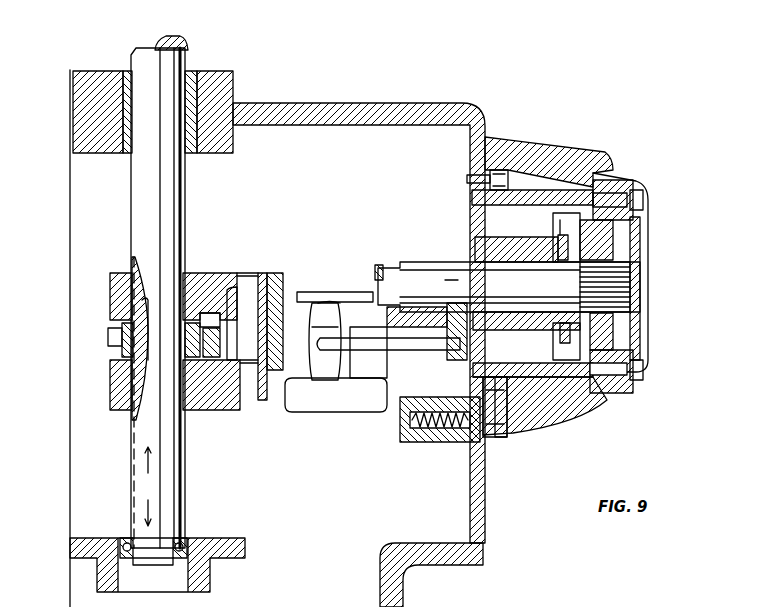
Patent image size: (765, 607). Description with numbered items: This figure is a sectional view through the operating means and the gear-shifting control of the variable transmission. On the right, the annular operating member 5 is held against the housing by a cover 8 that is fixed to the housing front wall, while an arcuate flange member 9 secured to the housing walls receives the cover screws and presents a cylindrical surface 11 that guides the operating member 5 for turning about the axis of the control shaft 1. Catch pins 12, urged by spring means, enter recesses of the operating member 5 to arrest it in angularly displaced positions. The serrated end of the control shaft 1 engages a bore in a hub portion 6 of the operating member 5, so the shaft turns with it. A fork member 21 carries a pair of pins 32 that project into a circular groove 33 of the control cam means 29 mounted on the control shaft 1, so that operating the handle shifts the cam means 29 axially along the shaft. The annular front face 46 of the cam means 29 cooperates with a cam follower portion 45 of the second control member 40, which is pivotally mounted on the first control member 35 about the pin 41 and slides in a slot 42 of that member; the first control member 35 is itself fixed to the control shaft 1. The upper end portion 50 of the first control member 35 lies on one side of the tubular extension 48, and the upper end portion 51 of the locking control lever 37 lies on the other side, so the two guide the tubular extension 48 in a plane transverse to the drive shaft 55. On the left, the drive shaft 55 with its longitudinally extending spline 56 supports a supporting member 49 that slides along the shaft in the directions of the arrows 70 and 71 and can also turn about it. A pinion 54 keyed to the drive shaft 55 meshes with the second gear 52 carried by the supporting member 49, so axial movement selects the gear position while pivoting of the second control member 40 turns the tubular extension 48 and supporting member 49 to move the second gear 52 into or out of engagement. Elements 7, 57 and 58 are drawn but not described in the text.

The control shaft 1 is at (451, 273).
The operating member 5 is at (585, 420).
The hub portion 6 is at (612, 322).
The cover with splined shaft 7 is at (625, 270).
The cover 8 is at (620, 385).
The arcuate flange member 9 is at (503, 420).
The cylindrical surface 11 is at (497, 168).
The catch pins 12 is at (462, 432).
The fork member 21 is at (553, 353).
The control cam means 29 is at (493, 240).
The pins 32 is at (562, 250).
The circular groove 33 is at (568, 222).
The first control member 35 is at (388, 351).
The locking control lever 37 is at (348, 300).
The second control member 40 is at (430, 330).
The pin 41 is at (440, 292).
The slot 42 is at (420, 348).
The cam follower portion 45 is at (465, 362).
The annular front face 46 is at (470, 240).
The tubular extension 48 is at (306, 290).
The supporting member 49 is at (228, 278).
The upper end portion 50 is at (343, 407).
The upper end portion 51 is at (330, 300).
The second gear 52 is at (304, 380).
The pinion 54 is at (108, 336).
The drive shaft 55 is at (163, 502).
The spline 56 is at (133, 422).
The rings 57 is at (240, 300).
The key 58 is at (205, 410).
The arrow 70 is at (140, 513).
The arrow 71 is at (140, 460).